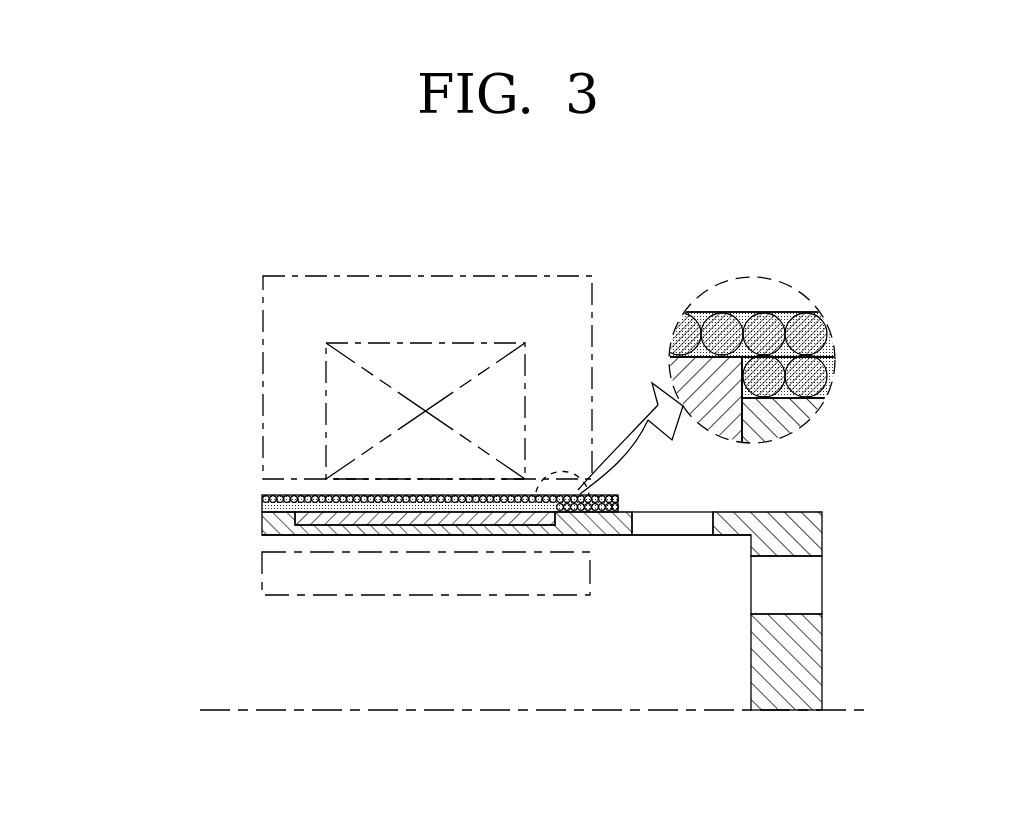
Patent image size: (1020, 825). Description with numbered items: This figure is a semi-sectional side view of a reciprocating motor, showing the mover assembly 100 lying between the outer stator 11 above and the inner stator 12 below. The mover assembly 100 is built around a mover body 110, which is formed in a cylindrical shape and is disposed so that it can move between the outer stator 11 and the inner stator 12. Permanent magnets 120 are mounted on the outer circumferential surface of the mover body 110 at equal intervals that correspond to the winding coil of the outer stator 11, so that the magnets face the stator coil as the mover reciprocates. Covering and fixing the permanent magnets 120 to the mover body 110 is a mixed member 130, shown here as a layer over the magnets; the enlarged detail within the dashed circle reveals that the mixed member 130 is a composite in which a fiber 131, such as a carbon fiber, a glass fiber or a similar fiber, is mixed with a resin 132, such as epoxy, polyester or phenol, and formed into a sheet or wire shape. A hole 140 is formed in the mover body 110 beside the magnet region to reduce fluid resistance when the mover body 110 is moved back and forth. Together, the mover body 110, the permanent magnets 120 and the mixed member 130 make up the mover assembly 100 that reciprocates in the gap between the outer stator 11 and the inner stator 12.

The outer stator 11 is at (286, 356).
The inner stator 12 is at (353, 583).
The mover assembly 100 is at (146, 493).
The mover body 110 is at (262, 536).
The permanent magnets 120 is at (262, 517).
The mixed member 130 is at (262, 496).
The fiber 131 is at (752, 315).
The resin 132 is at (781, 315).
The hole 140 is at (690, 516).